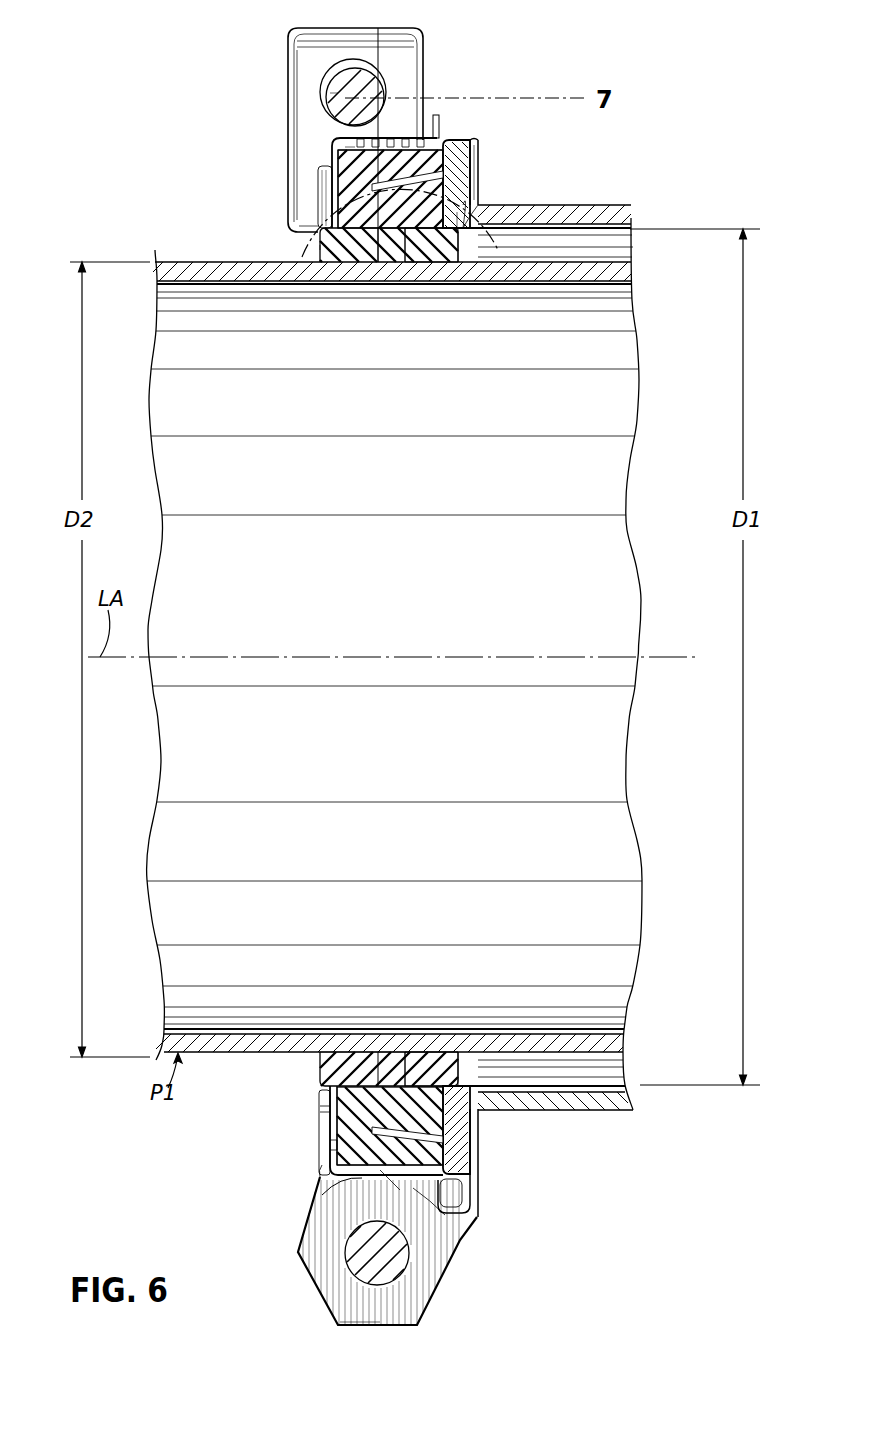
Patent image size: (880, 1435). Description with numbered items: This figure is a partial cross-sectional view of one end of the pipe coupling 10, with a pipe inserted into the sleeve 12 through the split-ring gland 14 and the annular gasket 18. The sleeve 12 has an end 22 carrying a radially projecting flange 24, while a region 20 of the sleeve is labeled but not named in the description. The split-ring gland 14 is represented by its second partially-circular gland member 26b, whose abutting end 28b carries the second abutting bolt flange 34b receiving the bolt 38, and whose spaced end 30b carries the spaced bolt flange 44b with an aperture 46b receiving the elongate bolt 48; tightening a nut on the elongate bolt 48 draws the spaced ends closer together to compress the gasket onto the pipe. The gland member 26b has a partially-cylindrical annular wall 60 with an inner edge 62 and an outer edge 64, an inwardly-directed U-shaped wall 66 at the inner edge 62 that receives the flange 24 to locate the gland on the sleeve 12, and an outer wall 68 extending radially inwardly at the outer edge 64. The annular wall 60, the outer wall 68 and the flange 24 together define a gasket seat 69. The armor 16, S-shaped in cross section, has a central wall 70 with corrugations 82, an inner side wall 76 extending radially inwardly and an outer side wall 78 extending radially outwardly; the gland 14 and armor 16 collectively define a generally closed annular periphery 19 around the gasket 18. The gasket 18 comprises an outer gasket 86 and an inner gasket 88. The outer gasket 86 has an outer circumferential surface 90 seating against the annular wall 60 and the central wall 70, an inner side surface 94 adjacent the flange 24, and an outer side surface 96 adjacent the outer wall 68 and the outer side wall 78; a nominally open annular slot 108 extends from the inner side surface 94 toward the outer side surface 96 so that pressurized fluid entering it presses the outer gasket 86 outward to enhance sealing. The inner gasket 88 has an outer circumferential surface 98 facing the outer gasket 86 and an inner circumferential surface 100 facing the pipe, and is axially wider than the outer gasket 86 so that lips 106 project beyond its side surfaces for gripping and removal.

The pipe coupling 10 is at (152, 193).
The sleeve 12 is at (618, 254).
The split-ring gland 14 is at (293, 33).
The armor 16 is at (332, 141).
The annular gasket 18 is at (392, 1052).
The closed annular periphery 19 is at (379, 133).
The outer pipe 20 is at (617, 204).
The end of the sleeve 22 is at (473, 195).
The flange 24 is at (455, 153).
The second partially-circular gland member 26b is at (424, 34).
The abutting end 28b is at (362, 1313).
The spaced end 30b is at (470, 175).
The second abutting bolt flange 34b is at (308, 1237).
The bolt 38 is at (362, 1268).
The spaced bolt flange 44b is at (288, 56).
The aperture 46b is at (330, 80).
The elongate bolt 48 is at (334, 93).
The partially-cylindrical annular wall 60 is at (352, 1182).
The inner edge 62 is at (413, 1190).
The outer edge 64 is at (322, 1176).
The U-shaped wall 66 is at (479, 142).
The outer wall 68 is at (318, 220).
The gasket seat 69 is at (336, 1145).
The central wall 70 is at (398, 136).
The inner side wall 76 is at (440, 124).
The outer side wall 78 is at (372, 187).
The corrugations 82 is at (340, 149).
The outer gasket 86 is at (347, 200).
The inner gasket 88 is at (320, 246).
The outer circumferential surface 90 is at (380, 1170).
The inner side surface 94 is at (450, 1143).
The outer side surface 96 is at (329, 1108).
The outer circumferential surface 98 is at (457, 212).
The inner circumferential surface 100 is at (353, 247).
The lips 106 is at (317, 245).
The annular slot 108 is at (410, 247).